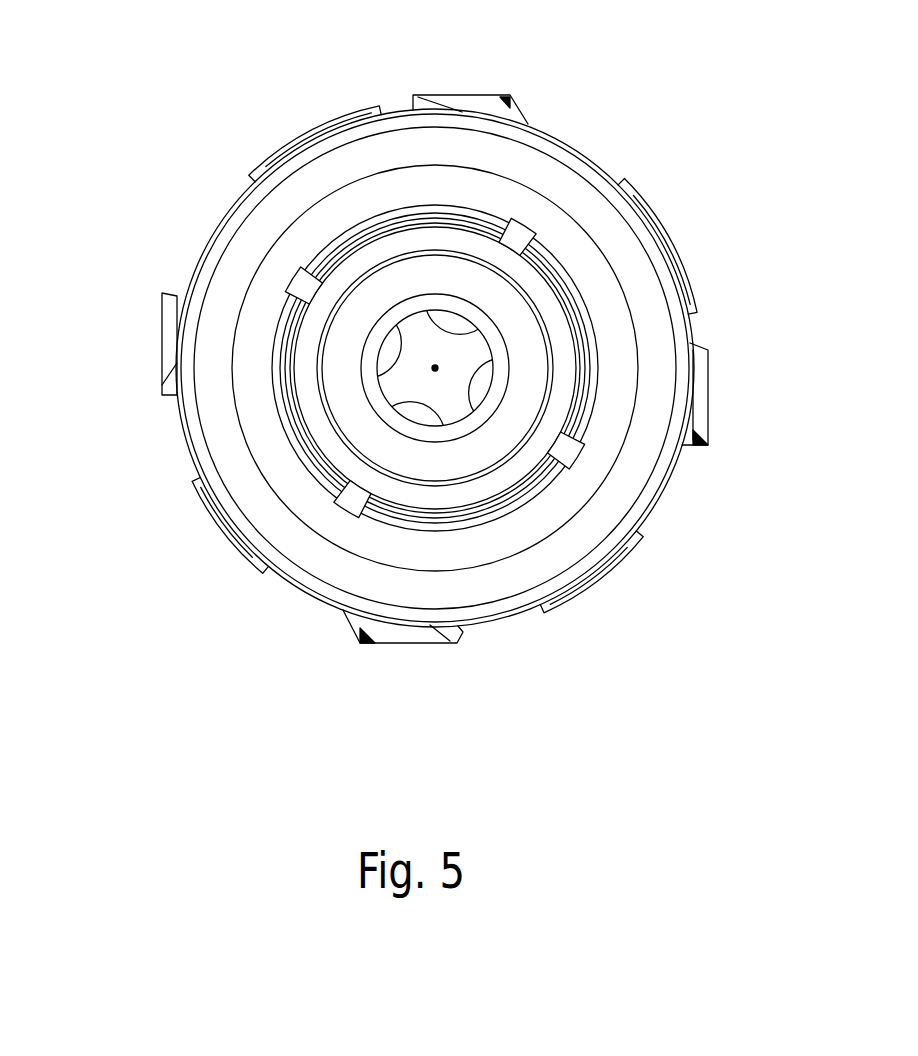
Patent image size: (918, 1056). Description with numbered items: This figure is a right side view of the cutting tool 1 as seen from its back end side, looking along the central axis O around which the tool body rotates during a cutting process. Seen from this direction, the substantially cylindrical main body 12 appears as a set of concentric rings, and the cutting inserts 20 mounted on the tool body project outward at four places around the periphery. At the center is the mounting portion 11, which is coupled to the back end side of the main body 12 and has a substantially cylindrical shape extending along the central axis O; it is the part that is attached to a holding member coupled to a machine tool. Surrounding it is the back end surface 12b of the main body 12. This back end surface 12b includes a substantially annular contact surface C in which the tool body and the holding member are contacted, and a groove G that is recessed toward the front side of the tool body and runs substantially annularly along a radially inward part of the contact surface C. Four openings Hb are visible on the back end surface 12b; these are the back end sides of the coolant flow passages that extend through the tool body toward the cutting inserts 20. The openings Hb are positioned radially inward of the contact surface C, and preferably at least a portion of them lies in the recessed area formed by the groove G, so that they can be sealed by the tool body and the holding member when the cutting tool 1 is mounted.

The cutting tool 1 is at (173, 63).
The main body 12 is at (224, 224).
The back end surface 12b is at (300, 158).
The cutting insert 20 is at (463, 107).
The contact surface C is at (242, 262).
The groove G is at (530, 208).
The openings Hb is at (300, 290).
The mounting portion 11 is at (345, 405).
The central axis O is at (437, 370).